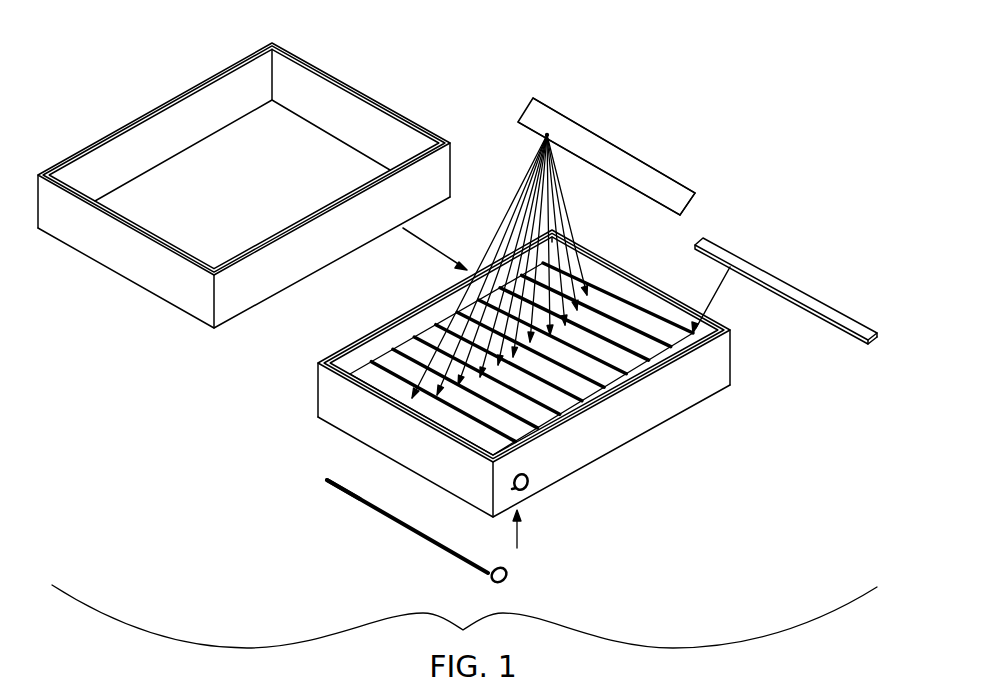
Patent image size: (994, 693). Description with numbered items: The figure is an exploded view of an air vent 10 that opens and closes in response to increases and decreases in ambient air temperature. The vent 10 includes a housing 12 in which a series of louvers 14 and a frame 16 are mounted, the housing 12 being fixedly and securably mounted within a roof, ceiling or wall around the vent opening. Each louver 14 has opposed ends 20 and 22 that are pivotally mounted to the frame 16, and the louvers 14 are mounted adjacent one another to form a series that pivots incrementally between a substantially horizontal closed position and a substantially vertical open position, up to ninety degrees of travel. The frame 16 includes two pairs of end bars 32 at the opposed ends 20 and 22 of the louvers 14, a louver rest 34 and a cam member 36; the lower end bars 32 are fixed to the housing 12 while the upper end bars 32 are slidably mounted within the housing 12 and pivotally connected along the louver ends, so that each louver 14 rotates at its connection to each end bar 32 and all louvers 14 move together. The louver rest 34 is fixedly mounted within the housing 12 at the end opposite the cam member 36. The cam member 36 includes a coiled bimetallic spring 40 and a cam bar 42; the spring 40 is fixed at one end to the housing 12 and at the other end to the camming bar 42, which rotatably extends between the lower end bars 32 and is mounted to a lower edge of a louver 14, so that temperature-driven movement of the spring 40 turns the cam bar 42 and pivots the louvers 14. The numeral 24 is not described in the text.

The air vent 10 is at (721, 119).
The housing 12 is at (412, 121).
The louvers 14 is at (612, 158).
The frame 16 is at (316, 361).
The end 20 is at (697, 199).
The end 22 is at (523, 107).
The edges of housing bar 24 is at (582, 124).
The end bars 32 is at (473, 330).
The louver rest 34 is at (785, 280).
The cam member 36 is at (391, 533).
The spring 40 is at (515, 568).
The cam bar 42 is at (350, 495).